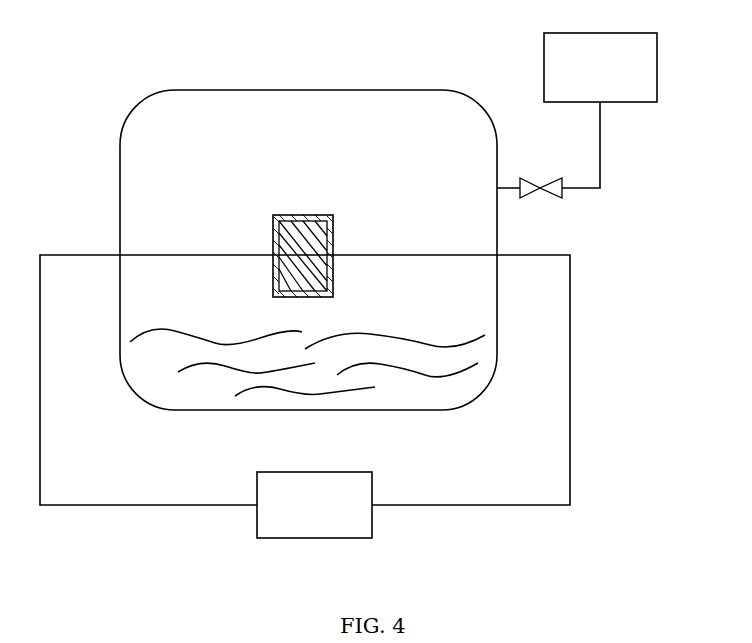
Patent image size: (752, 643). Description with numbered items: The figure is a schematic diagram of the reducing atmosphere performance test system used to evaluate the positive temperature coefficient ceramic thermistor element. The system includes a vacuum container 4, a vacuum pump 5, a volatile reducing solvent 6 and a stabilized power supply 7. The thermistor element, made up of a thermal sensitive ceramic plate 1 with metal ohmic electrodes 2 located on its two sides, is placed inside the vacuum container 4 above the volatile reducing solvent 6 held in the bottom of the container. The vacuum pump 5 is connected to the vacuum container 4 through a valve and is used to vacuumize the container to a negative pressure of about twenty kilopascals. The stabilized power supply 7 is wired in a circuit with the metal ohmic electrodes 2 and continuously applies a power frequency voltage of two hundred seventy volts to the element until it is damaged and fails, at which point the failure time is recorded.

The thermal sensitive ceramic plate 1 is at (333, 245).
The metal ohmic electrodes 2 is at (333, 272).
The vacuum container 4 is at (119, 156).
The vacuum pump 5 is at (633, 65).
The volatile reducing solvent 6 is at (450, 337).
The stabilized power supply 7 is at (340, 512).